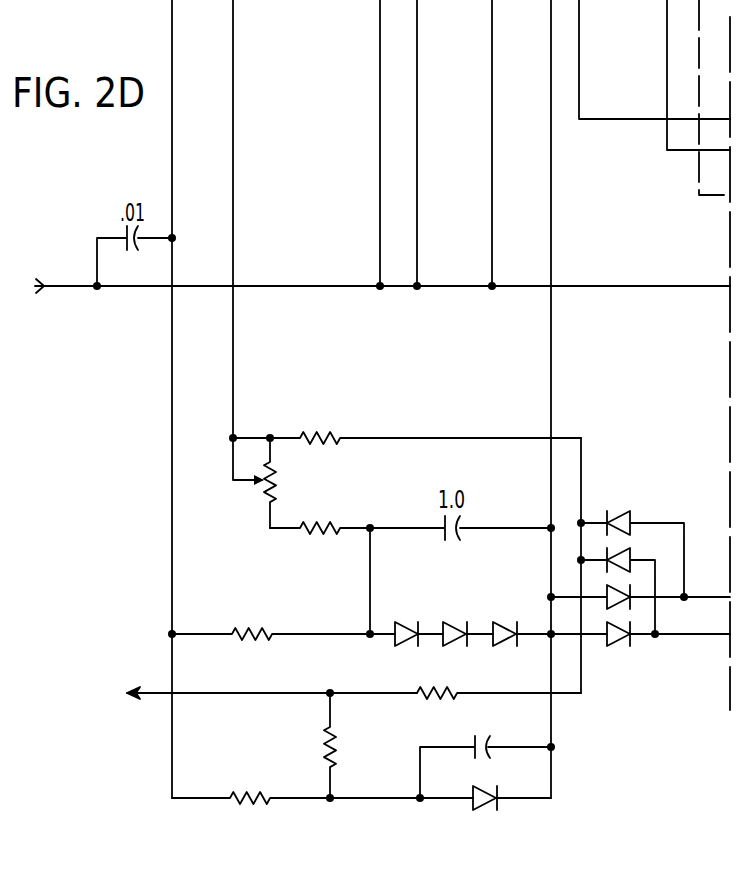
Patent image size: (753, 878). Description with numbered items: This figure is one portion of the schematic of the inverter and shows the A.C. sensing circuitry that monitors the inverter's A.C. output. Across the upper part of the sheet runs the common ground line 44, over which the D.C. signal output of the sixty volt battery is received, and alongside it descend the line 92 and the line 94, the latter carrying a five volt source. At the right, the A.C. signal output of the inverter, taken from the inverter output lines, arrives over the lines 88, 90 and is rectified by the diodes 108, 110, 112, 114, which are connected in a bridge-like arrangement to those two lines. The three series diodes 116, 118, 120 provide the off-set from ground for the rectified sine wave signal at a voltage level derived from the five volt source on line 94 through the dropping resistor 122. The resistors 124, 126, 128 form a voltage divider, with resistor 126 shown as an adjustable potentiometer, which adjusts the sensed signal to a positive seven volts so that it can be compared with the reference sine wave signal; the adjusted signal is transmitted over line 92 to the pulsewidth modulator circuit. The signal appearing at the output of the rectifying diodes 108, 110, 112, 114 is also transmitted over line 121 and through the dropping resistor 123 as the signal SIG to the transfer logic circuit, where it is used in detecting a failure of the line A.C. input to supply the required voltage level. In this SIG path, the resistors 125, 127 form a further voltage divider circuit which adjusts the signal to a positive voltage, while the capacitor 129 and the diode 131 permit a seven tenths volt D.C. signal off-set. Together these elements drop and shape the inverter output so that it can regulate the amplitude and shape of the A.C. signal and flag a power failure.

The common ground line 44 is at (315, 288).
The line 88 is at (702, 596).
The line 90 is at (712, 632).
The line 92 is at (233, 40).
The line 94 is at (172, 40).
The diode 108 is at (632, 521).
The diode 110 is at (622, 560).
The diode 112 is at (628, 596).
The diode 114 is at (612, 640).
The diode 116 is at (510, 628).
The diode 118 is at (459, 628).
The diode 120 is at (409, 628).
The line 121 is at (155, 697).
The dropping resistor 122 is at (250, 644).
The dropping resistor 123 is at (424, 700).
The resistor 124 is at (322, 446).
The resistor 125 is at (322, 741).
The resistor 126 is at (265, 494).
The resistor 127 is at (240, 806).
The resistor 128 is at (322, 521).
The capacitor 129 is at (480, 760).
The diode 131 is at (470, 806).